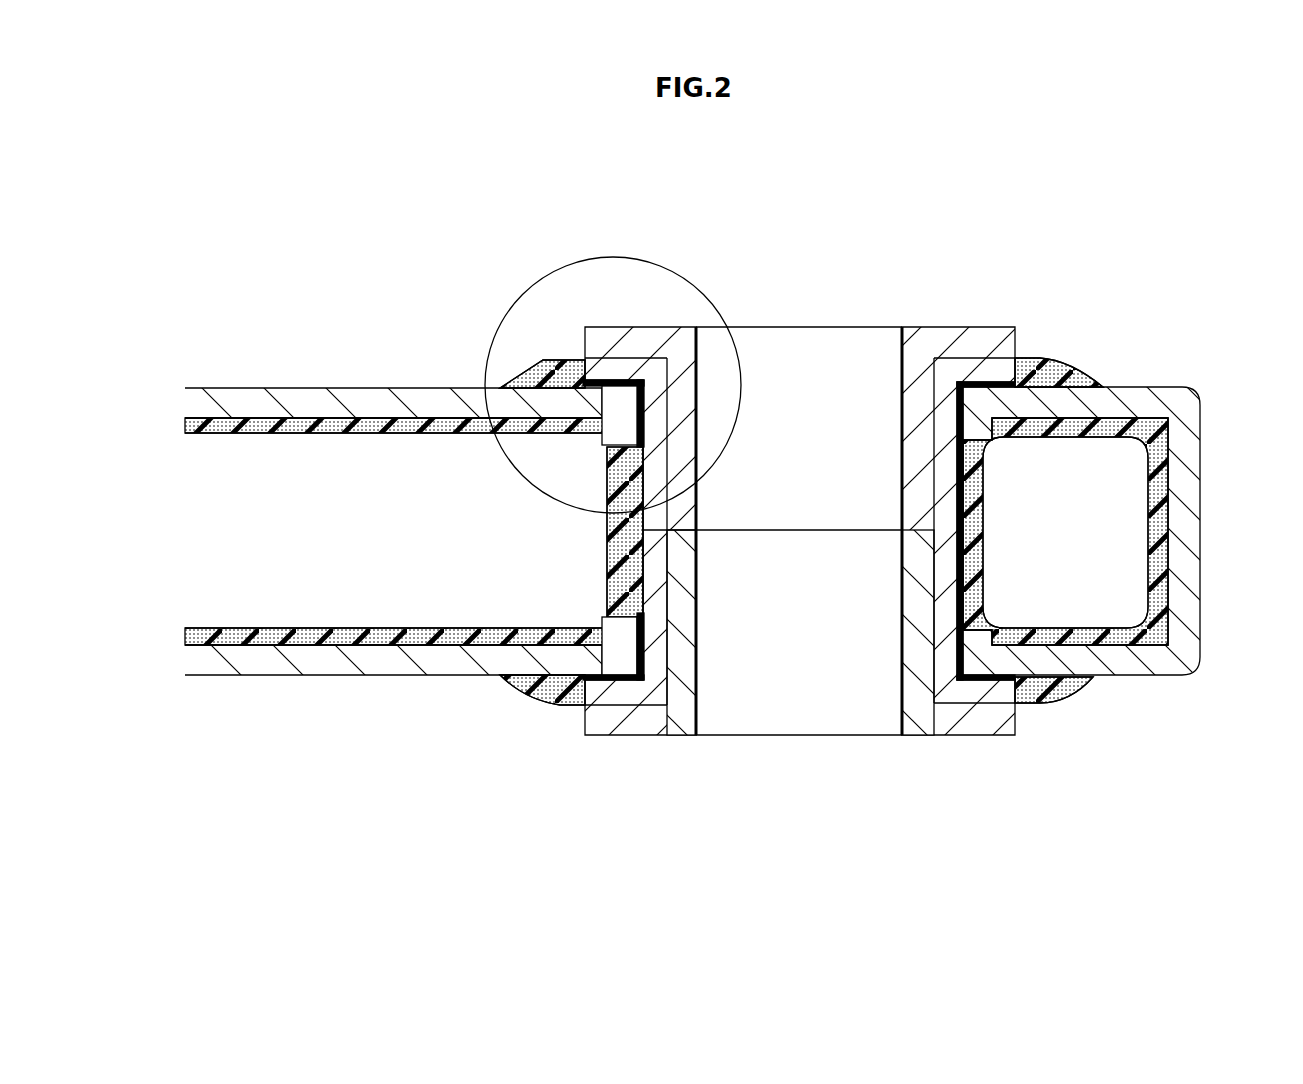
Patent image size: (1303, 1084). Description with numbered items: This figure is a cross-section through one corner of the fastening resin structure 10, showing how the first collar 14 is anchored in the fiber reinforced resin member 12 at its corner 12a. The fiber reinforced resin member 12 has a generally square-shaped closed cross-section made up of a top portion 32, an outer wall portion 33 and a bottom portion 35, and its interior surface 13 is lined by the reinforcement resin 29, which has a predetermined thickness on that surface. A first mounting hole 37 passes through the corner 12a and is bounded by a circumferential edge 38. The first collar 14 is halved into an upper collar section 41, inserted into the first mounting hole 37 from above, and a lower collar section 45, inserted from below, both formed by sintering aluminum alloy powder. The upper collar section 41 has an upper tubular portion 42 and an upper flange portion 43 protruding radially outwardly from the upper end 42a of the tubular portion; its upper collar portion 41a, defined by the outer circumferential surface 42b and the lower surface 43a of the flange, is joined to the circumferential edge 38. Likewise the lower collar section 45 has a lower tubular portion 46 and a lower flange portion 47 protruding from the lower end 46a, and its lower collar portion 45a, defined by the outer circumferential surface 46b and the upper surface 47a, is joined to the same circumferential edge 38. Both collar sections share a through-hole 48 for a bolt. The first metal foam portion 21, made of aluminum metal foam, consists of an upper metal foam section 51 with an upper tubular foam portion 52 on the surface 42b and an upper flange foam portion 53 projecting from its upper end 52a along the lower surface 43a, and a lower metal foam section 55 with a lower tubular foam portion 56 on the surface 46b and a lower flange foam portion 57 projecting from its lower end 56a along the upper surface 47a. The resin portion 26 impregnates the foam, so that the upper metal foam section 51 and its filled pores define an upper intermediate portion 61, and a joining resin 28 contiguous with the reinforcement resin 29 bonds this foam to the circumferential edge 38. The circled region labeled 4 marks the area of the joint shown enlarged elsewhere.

The fastening resin structure 10 is at (403, 147).
The enlarged portion 4 is at (675, 273).
The fiber reinforced resin member 12 is at (295, 371).
The corner 12a is at (1070, 383).
The interior surface 13 is at (405, 434).
The first collar 14 is at (782, 568).
The first metal foam portion 21 is at (412, 798).
The resin portion 26 is at (526, 341).
The joining resin 28 is at (645, 416).
The reinforcement resin 29 is at (298, 434).
The top portion 32 is at (388, 386).
The outer wall portion 33 is at (1201, 545).
The bottom portion 35 is at (300, 676).
The first mounting hole 37 is at (920, 426).
The circumferential edge 38 is at (997, 440).
The upper collar section 41 is at (897, 489).
The upper collar portion 41a is at (1100, 447).
The upper tubular portion 42 is at (912, 398).
The upper end 42a is at (915, 345).
The outer circumferential surface 42b is at (985, 516).
The upper flange portion 43 is at (980, 346).
The lower surface 43a is at (1000, 431).
The lower collar section 45 is at (897, 669).
The lower collar portion 45a is at (1100, 662).
The lower tubular portion 46 is at (903, 582).
The lower end 46a is at (920, 728).
The outer circumferential surface 46b is at (985, 590).
The lower flange portion 47 is at (975, 736).
The upper surface 47a is at (1025, 690).
The through-hole 48 is at (722, 355).
The upper metal foam section 51 is at (611, 483).
The upper tubular foam portion 52 is at (468, 455).
The upper end 52a is at (640, 372).
The upper flange foam portion 53 is at (600, 446).
The lower metal foam section 55 is at (531, 728).
The lower tubular foam portion 56 is at (548, 690).
The lower end 56a is at (658, 692).
The lower flange foam portion 57 is at (600, 745).
The upper intermediate portion 61 is at (684, 461).